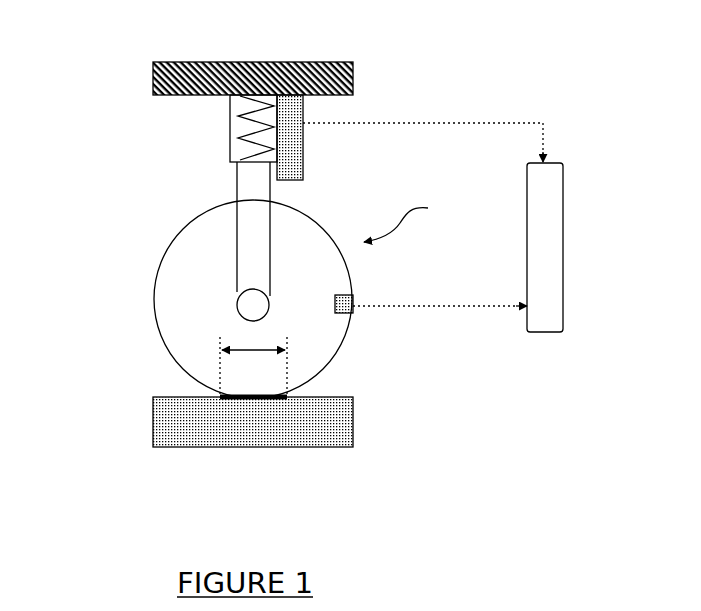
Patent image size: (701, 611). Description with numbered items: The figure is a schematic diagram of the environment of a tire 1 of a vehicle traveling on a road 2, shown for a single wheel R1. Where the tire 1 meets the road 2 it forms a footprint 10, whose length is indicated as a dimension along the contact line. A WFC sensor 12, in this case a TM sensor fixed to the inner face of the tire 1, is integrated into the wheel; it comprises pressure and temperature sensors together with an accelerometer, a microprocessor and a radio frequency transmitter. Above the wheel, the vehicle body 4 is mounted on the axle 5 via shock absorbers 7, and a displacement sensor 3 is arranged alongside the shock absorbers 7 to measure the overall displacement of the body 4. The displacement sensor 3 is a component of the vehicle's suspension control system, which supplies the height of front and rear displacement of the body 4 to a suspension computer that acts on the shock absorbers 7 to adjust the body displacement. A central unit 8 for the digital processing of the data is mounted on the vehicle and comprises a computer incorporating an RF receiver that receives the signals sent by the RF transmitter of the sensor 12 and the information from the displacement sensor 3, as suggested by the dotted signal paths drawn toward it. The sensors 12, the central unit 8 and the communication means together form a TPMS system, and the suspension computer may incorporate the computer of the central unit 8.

The tire 1 is at (160, 262).
The road 2 is at (327, 420).
The displacement sensor 3 is at (303, 137).
The vehicle body 4 is at (355, 73).
The axle 5 is at (257, 310).
The shock absorber 7 is at (230, 125).
The central unit 8 is at (527, 197).
The footprint 10 is at (250, 397).
The WFC sensor 12 is at (347, 295).
The wheel R1 is at (419, 217).